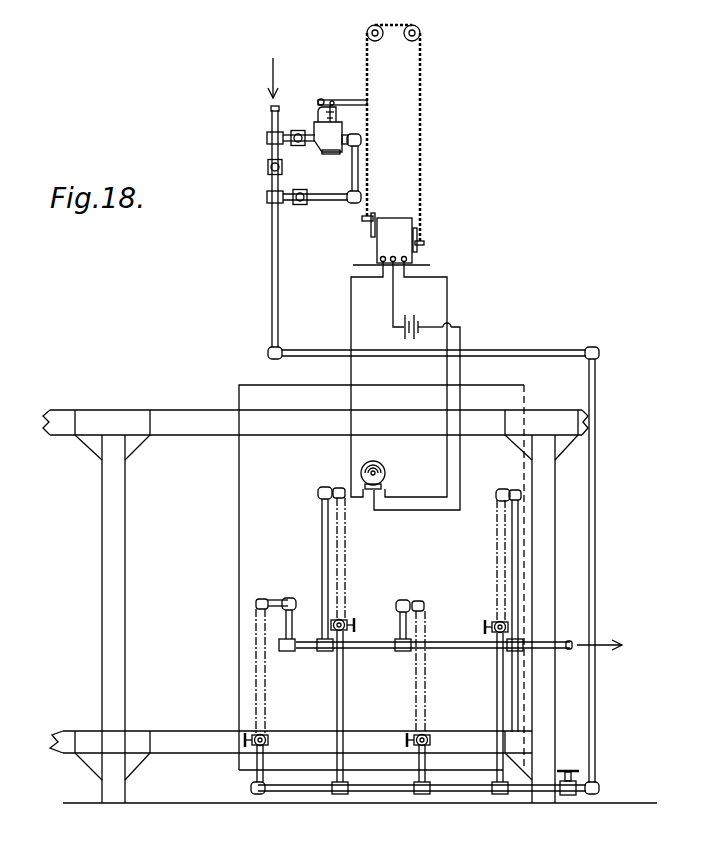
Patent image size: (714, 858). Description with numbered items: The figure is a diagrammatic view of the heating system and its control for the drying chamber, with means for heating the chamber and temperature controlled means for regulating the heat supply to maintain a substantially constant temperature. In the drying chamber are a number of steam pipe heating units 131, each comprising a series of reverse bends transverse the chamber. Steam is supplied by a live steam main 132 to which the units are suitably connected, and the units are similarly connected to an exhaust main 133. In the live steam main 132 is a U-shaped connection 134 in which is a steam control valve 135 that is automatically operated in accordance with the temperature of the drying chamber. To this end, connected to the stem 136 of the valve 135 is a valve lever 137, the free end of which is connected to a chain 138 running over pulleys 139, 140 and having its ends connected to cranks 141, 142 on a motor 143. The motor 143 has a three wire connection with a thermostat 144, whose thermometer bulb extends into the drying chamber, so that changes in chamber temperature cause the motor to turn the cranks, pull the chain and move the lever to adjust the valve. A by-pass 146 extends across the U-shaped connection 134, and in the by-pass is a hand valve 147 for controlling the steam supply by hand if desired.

The steam pipe heating unit 131 is at (343, 558).
The main 132 is at (278, 294).
The exhaust main 133 is at (545, 641).
The U-shaped connection 134 is at (352, 172).
The steam control valve 135 is at (330, 137).
The stem 136 is at (322, 114).
The valve lever 137 is at (353, 101).
The chain 138 is at (407, 25).
The pulley 139 is at (366, 33).
The pulley 140 is at (421, 36).
The crank 141 is at (370, 226).
The crank 142 is at (418, 243).
The motor 143 is at (397, 227).
The thermostat 144 is at (386, 474).
The by-pass 146 is at (272, 185).
The hand valve 147 is at (268, 167).